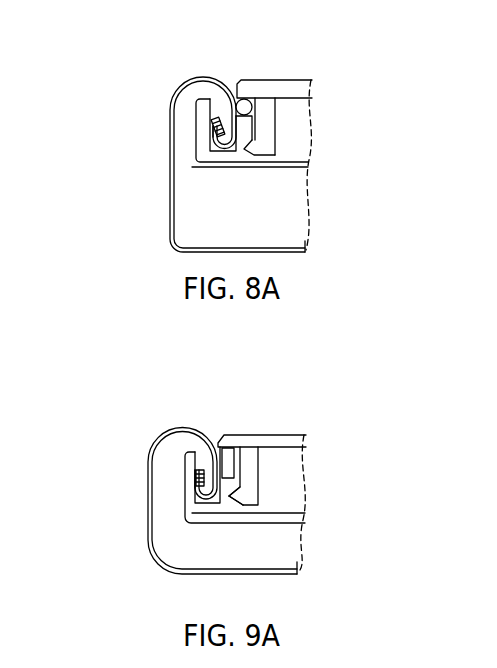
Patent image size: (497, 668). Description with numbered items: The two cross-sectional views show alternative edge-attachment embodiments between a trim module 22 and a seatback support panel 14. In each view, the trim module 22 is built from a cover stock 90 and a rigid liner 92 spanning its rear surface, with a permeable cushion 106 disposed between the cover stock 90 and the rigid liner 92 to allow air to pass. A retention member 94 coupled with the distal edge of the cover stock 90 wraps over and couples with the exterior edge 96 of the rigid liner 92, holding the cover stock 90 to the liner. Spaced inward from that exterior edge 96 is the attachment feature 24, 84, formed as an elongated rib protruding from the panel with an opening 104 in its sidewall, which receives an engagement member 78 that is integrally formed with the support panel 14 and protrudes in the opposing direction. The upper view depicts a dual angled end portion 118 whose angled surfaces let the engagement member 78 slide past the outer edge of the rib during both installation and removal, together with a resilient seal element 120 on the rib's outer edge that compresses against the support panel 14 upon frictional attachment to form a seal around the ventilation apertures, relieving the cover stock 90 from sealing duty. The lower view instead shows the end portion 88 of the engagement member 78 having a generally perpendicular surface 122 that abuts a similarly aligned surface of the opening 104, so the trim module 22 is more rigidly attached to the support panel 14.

In FIG. 9A, the support panel 14 is at (289, 440).
In FIG. 8A, the trim module 22 is at (112, 189).
In FIG. 9A, the trim module 22 is at (122, 538).
In FIG. 8A, the attachment feature 24 is at (229, 85).
In FIG. 9A, the attachment feature 24 is at (192, 433).
In FIG. 8A, the seal bulb portion 84 is at (240, 125).
In FIG. 9A, the seal bulb portion 84 is at (230, 456).
In FIG. 8A, the engagement member 78 is at (268, 128).
In FIG. 9A, the engagement member 78 is at (260, 470).
In FIG. 9A, the end portion 88 is at (247, 495).
In FIG. 8A, the cover stock 90 is at (170, 232).
In FIG. 9A, the cover stock 90 is at (158, 548).
In FIG. 8A, the rigid liner 92 is at (293, 157).
In FIG. 9A, the rigid liner 92 is at (287, 520).
In FIG. 8A, the retention member 94 is at (215, 119).
In FIG. 9A, the retention member 94 is at (205, 472).
In FIG. 8A, the exterior edge 96 is at (207, 135).
In FIG. 9A, the exterior edge 96 is at (195, 478).
In FIG. 9A, the opening 104 is at (228, 497).
In FIG. 8A, the permeable cushion 106 is at (196, 202).
In FIG. 9A, the permeable cushion 106 is at (165, 498).
In FIG. 8A, the dual angled end portion 118 is at (258, 145).
In FIG. 8A, the resilient seal element 120 is at (244, 99).
In FIG. 9A, the perpendicular surface 122 is at (233, 483).